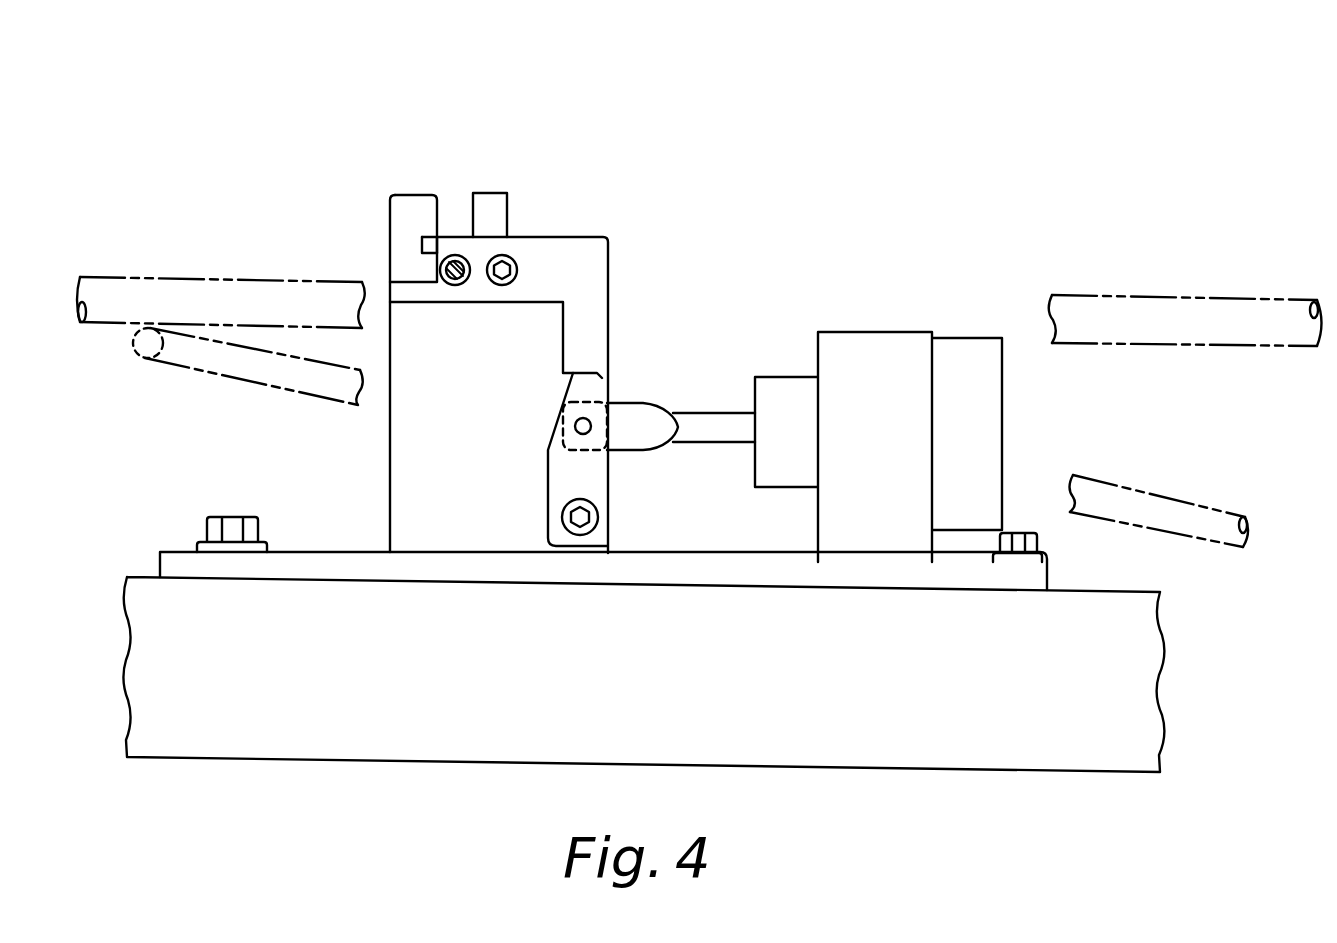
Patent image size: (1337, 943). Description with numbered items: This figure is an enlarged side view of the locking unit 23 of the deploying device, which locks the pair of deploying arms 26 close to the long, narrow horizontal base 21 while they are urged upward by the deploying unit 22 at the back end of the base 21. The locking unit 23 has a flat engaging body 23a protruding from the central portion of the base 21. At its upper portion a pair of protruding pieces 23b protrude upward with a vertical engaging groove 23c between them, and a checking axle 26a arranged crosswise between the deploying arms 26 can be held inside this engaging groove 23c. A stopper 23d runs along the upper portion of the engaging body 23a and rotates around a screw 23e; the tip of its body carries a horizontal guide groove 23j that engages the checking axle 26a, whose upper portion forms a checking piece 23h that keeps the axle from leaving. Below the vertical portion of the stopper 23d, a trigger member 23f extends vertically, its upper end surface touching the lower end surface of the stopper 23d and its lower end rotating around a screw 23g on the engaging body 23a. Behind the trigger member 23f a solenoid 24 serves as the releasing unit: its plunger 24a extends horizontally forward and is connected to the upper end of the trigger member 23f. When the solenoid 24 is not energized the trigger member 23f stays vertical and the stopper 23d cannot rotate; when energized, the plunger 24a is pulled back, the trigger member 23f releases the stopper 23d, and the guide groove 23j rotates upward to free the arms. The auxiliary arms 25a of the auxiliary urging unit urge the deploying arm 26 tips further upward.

The base 21 is at (1135, 686).
The deploying unit 22 is at (1190, 295).
The locking unit 23 is at (600, 222).
The engaging body 23a is at (410, 362).
The protruding pieces 23b is at (427, 225).
The engaging groove 23c is at (448, 212).
The stopper 23d is at (600, 260).
The screw 23e is at (502, 262).
The trigger member 23f is at (583, 468).
The screw 23g is at (590, 517).
The checking piece 23h is at (398, 207).
The guide groove 23j is at (423, 278).
The solenoid 24 is at (773, 393).
The plunger 24a is at (632, 422).
The auxiliary arms 25a is at (242, 365).
The deploying arms 26 is at (135, 277).
The checking axle 26a is at (455, 262).